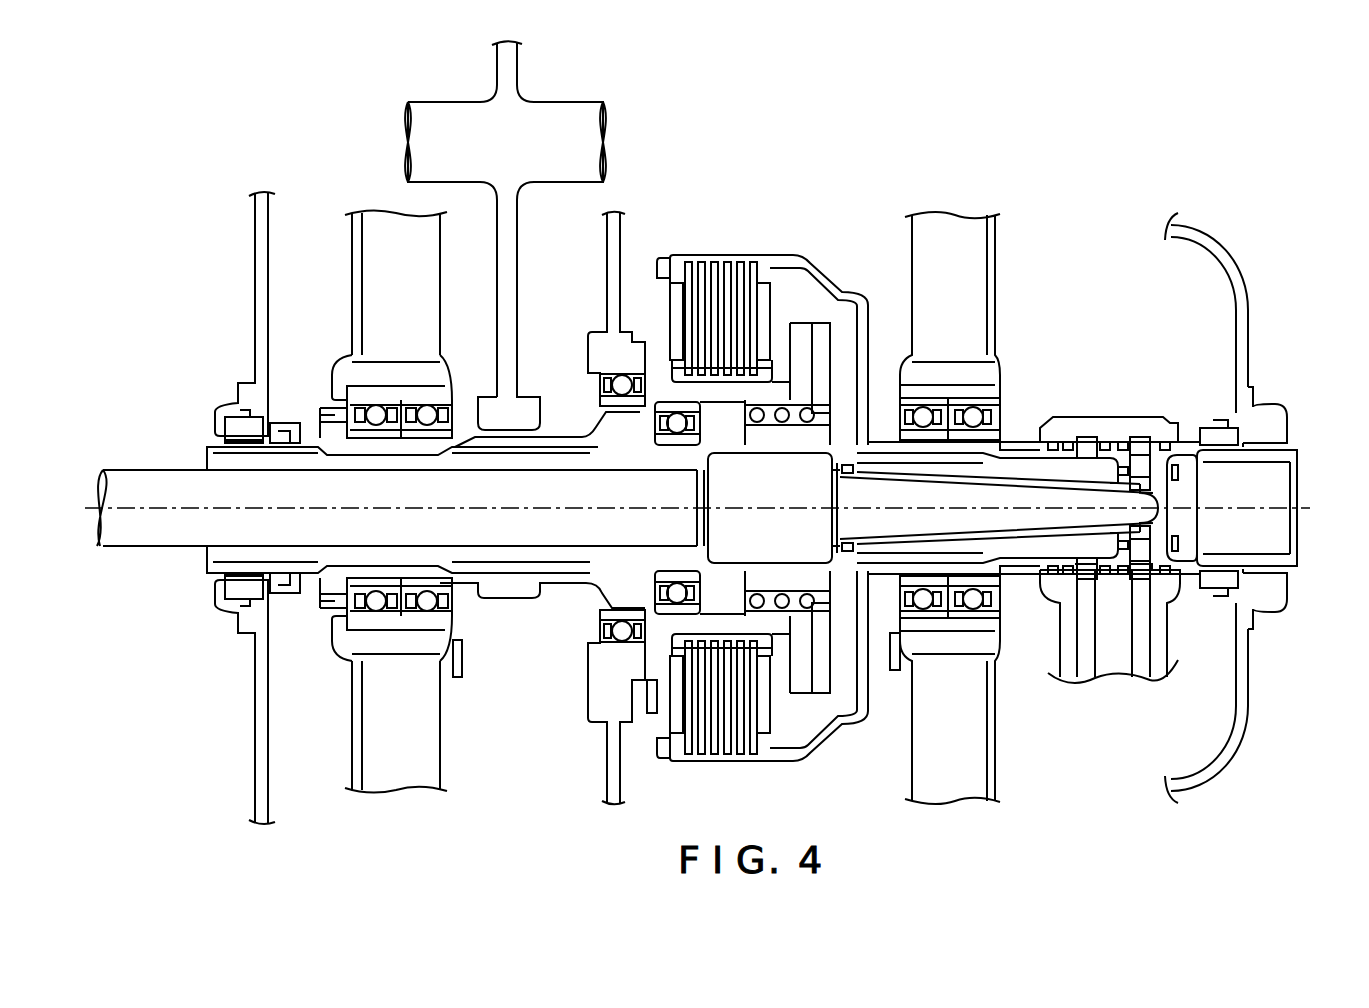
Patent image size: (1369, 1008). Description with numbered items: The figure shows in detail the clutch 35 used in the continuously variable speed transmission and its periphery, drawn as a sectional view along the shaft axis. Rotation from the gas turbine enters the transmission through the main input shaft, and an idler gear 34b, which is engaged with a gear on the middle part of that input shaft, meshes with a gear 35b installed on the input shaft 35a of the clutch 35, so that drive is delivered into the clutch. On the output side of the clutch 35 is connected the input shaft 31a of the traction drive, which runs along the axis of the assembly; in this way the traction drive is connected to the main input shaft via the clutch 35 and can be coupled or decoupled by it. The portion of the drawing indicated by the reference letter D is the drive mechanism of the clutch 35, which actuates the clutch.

The input shaft of the traction drive 31a is at (160, 469).
The idler gear 34b is at (557, 100).
The clutch 35 is at (741, 223).
The input shaft of the clutch 35a is at (559, 436).
The gear 35b is at (512, 625).
The drive mechanism of the clutch D is at (1105, 203).